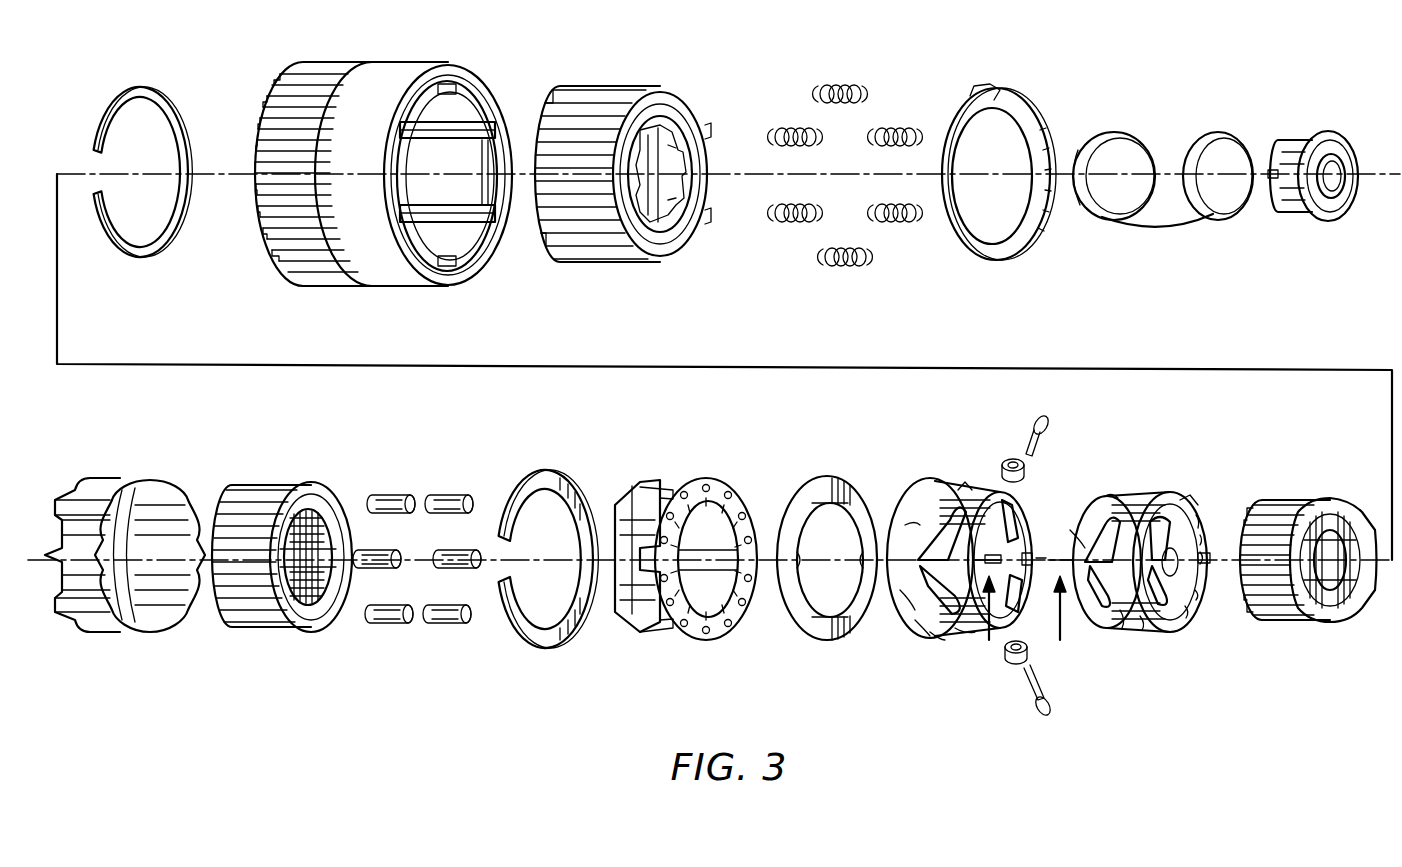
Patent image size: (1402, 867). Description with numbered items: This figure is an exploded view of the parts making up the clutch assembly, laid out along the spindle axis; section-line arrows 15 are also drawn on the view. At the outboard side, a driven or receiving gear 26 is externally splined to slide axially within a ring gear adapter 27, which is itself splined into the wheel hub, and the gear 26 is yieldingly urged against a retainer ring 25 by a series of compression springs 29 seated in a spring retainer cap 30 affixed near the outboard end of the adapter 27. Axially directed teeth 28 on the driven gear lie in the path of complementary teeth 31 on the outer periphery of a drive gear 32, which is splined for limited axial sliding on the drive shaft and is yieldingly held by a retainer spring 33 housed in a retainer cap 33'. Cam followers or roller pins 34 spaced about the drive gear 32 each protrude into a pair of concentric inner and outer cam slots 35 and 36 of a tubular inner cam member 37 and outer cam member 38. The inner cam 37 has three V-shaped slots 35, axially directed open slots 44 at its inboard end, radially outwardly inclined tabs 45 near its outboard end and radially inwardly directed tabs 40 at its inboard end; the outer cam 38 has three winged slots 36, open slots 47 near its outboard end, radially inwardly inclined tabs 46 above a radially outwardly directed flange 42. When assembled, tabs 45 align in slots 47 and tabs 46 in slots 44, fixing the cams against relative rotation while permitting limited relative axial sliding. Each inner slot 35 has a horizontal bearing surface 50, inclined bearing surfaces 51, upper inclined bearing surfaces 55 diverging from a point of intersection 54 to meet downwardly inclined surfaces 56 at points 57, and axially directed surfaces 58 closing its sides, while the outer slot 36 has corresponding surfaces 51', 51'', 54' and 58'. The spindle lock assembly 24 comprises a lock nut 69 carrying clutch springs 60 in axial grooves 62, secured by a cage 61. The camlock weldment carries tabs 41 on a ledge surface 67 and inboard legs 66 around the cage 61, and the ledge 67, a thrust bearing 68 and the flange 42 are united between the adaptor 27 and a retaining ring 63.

The section line 15 is at (1023, 616).
The spindle lock assembly 24 is at (282, 539).
The retainer ring 25 is at (178, 120).
The driven gear 26 is at (664, 98).
The ring gear adapter 27 is at (452, 70).
The axially directed teeth 28 is at (690, 172).
The compression springs 29 is at (848, 266).
The spring retainer cap 30 is at (1025, 240).
The complementary teeth 31 is at (1308, 565).
The drive gear 32 is at (1342, 505).
The retainer spring 33 is at (1163, 192).
The retainer cap 33' is at (1322, 191).
The cam followers 34 is at (1018, 460).
The inner cam slots 35 is at (1190, 620).
The outer cam slots 36 is at (926, 492).
The inner cam member 37 is at (1200, 602).
The outer cam member 38 is at (1015, 557).
The radially inwardly directed tabs 40 is at (1147, 564).
The tabs 41 is at (728, 616).
The radially outwardly directed flange 42 is at (942, 634).
The axially directed open slots 44 is at (1112, 496).
The radially outwardly inclined tabs 45 is at (1144, 500).
The radially inwardly inclined tabs 46 is at (942, 492).
The open slots 47 is at (1038, 568).
The horizontal bearing surface 50 is at (896, 598).
The inclined bearing surfaces 51 is at (1087, 523).
The inclined bearing surfaces 51' is at (927, 652).
The ramp 51'' is at (895, 502).
The point of intersection 54 is at (1123, 640).
The point of intersection 54' is at (904, 642).
The outboard upper inclined bearing surfaces 55 is at (1150, 648).
The downwardly inclined bearing surfaces 56 is at (1202, 534).
The points 57 is at (1198, 516).
The axially directed surfaces 58 is at (1187, 482).
The axially directed surfaces 58' is at (1042, 549).
The clutch springs 60 is at (392, 497).
The cage 61 is at (168, 480).
The axial grooves 62 is at (240, 615).
The retaining ring 63 is at (530, 484).
The legs 66 is at (622, 506).
The ledge surface 67 is at (698, 564).
The thrust bearing 68 is at (812, 498).
The lock nut 69 is at (305, 618).